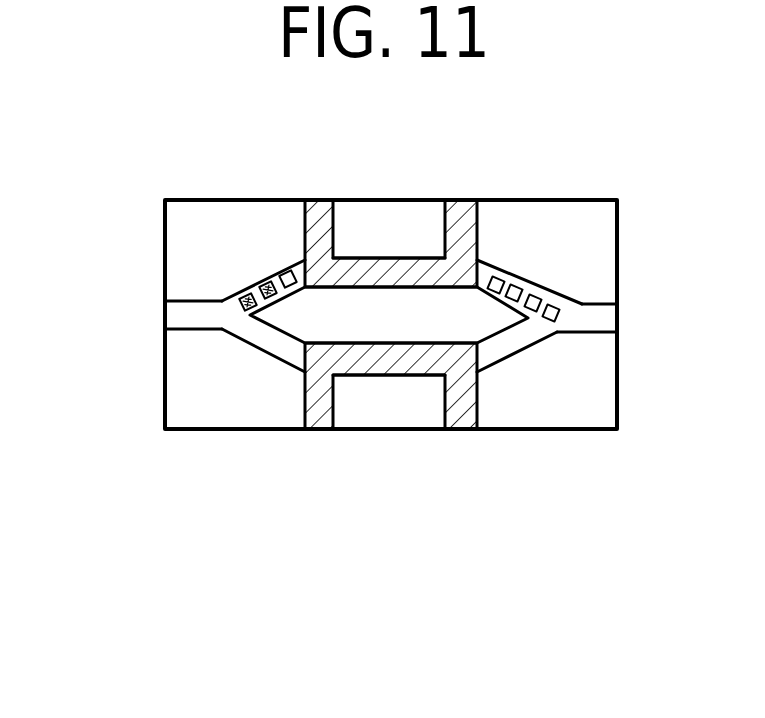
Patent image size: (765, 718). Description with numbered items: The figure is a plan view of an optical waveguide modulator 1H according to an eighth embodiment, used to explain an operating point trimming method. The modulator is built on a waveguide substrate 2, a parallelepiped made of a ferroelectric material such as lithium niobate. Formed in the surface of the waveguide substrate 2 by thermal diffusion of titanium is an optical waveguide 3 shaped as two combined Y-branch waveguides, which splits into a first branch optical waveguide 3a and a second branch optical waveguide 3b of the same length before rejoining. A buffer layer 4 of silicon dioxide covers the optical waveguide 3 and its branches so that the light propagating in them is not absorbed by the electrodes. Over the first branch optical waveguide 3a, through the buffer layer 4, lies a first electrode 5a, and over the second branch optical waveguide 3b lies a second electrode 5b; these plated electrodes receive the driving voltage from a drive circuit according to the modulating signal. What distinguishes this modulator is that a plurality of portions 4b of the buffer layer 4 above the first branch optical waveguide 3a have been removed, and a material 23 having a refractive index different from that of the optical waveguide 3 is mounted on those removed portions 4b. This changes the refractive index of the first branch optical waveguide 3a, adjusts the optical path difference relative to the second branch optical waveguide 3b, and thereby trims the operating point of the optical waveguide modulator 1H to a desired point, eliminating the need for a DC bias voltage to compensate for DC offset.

The optical waveguide modulator 1H is at (455, 176).
The waveguide substrate 2 is at (577, 433).
The optical waveguide 3 is at (184, 296).
The first branch optical waveguide 3a is at (230, 290).
The second branch optical waveguide 3b is at (267, 355).
The buffer layer 4 is at (199, 369).
The portions of the buffer layer 4b is at (267, 279).
The first electrode 5a is at (381, 257).
The second electrode 5b is at (387, 377).
The material with a different refractive index 23 is at (265, 288).